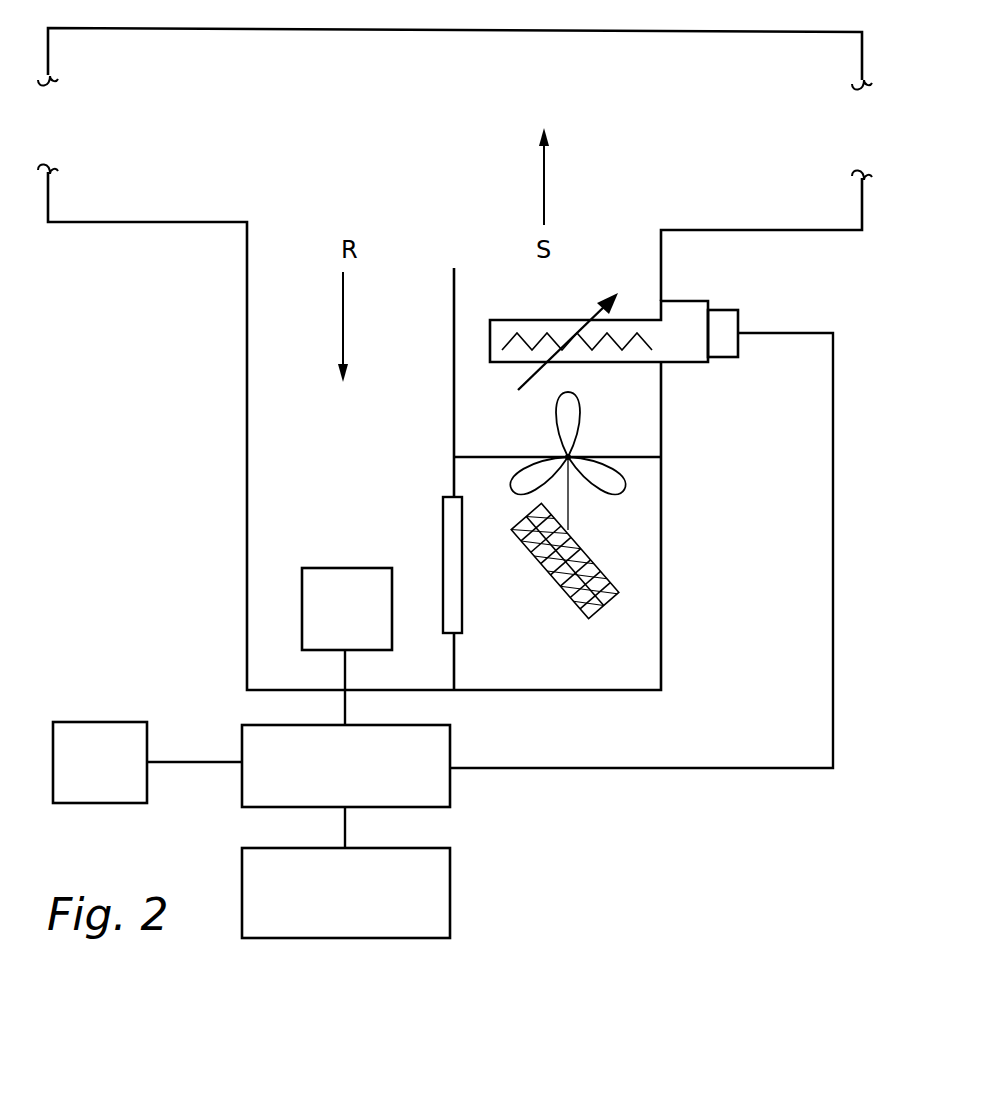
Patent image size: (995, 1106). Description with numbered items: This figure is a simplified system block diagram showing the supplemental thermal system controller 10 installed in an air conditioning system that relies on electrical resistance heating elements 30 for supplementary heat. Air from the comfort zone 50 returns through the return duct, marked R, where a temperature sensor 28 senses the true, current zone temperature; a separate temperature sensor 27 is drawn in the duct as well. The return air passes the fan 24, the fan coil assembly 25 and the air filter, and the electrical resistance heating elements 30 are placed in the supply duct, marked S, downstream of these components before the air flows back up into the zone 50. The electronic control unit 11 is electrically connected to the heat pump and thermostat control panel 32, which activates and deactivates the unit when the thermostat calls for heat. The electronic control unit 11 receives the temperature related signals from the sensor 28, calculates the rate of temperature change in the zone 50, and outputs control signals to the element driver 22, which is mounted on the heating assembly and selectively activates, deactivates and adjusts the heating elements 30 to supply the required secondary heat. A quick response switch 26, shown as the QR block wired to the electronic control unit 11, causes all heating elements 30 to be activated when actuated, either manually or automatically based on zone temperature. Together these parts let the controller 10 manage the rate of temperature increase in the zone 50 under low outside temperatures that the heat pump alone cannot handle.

The supplemental thermal system controller 10 is at (684, 862).
The electronic control unit 11 is at (450, 788).
The element driver 22 is at (722, 310).
The fan 24 is at (617, 460).
The fan coil assembly 25 is at (607, 580).
The quick response switch 26 is at (78, 803).
The air filter 27 is at (462, 613).
The temperature sensor 28 is at (302, 590).
The electrical resistance heating elements 30 is at (628, 340).
The heat pump and thermostat control panel 32 is at (450, 878).
The zone 50 is at (516, 130).